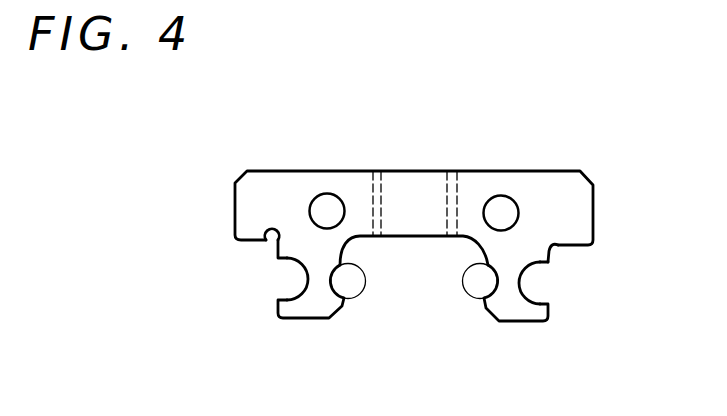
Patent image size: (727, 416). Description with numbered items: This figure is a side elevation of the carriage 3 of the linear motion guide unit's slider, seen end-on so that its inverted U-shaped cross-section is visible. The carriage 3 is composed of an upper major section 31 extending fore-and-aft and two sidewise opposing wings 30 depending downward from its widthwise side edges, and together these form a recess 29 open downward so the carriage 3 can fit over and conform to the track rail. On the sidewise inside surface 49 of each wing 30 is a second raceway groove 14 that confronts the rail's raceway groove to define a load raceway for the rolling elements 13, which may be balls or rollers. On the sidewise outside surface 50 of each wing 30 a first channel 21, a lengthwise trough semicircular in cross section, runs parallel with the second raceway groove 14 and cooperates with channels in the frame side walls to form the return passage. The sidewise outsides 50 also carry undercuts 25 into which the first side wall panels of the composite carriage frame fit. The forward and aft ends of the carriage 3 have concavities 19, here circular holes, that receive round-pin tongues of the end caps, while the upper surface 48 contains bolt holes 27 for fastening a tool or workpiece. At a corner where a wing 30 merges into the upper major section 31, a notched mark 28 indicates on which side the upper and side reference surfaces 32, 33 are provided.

The carriage 3 is at (563, 170).
The rolling element 13 is at (357, 282).
The second raceway groove 14 is at (350, 300).
The concavity 19 is at (329, 208).
The first channel 21 is at (298, 279).
The undercut 25 is at (263, 244).
The bolt hole 27 is at (381, 192).
The notched mark 28 is at (276, 234).
The recess 29 is at (410, 237).
The wing 30 is at (310, 298).
The upper major section 31 is at (355, 193).
The upper reference surface 32 is at (287, 169).
The side reference surface 33 is at (234, 205).
The upper surface 48 is at (535, 170).
The sidewise inside surface 49 is at (463, 172).
The sidewise outside surface 50 is at (278, 250).